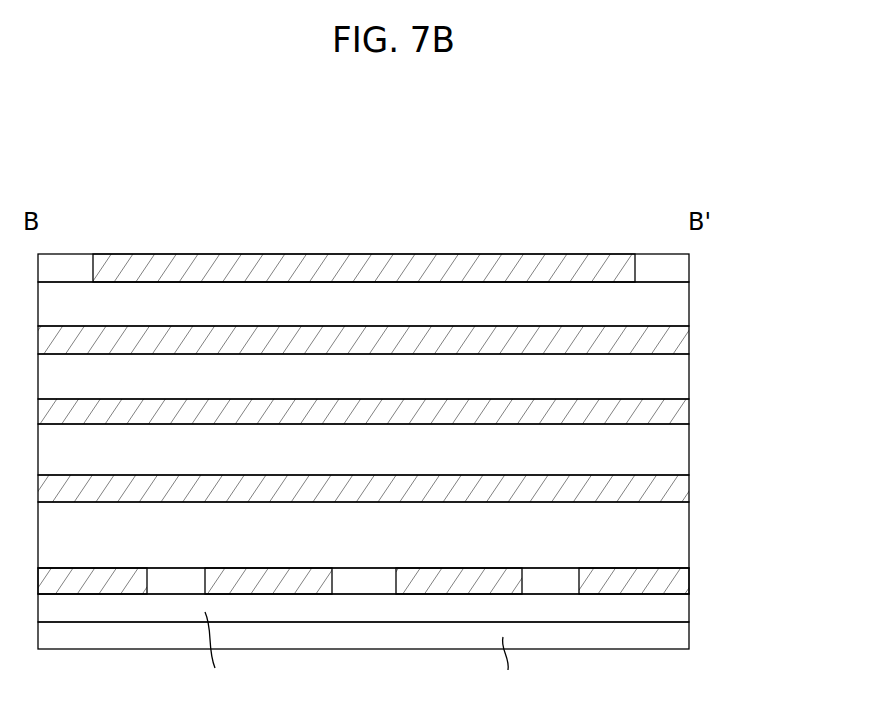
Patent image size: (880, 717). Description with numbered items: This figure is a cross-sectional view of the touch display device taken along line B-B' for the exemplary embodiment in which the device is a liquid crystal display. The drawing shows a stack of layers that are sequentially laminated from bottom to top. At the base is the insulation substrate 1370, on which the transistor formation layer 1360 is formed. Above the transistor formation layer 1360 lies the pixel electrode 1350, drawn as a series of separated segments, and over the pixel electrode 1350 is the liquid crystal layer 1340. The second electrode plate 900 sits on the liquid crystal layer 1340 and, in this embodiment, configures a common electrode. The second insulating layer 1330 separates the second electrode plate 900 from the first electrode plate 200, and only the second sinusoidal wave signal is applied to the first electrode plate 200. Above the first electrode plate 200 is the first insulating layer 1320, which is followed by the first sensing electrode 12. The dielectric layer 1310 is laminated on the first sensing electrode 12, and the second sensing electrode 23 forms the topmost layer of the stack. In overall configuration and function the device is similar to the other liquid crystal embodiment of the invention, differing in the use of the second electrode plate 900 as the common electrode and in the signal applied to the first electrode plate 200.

The second sensing electrode 23 is at (502, 254).
The dielectric layer 1310 is at (689, 307).
The first sensing electrode 12 is at (689, 343).
The first insulating layer 1320 is at (689, 378).
The first electrode plate 200 is at (689, 414).
The second insulating layer 1330 is at (689, 457).
The second electrode plate 900 is at (689, 492).
The liquid crystal layer 1340 is at (689, 535).
The pixel electrode 1350 is at (689, 580).
The transistor formation layer 1360 is at (689, 607).
The insulation substrate 1370 is at (689, 635).